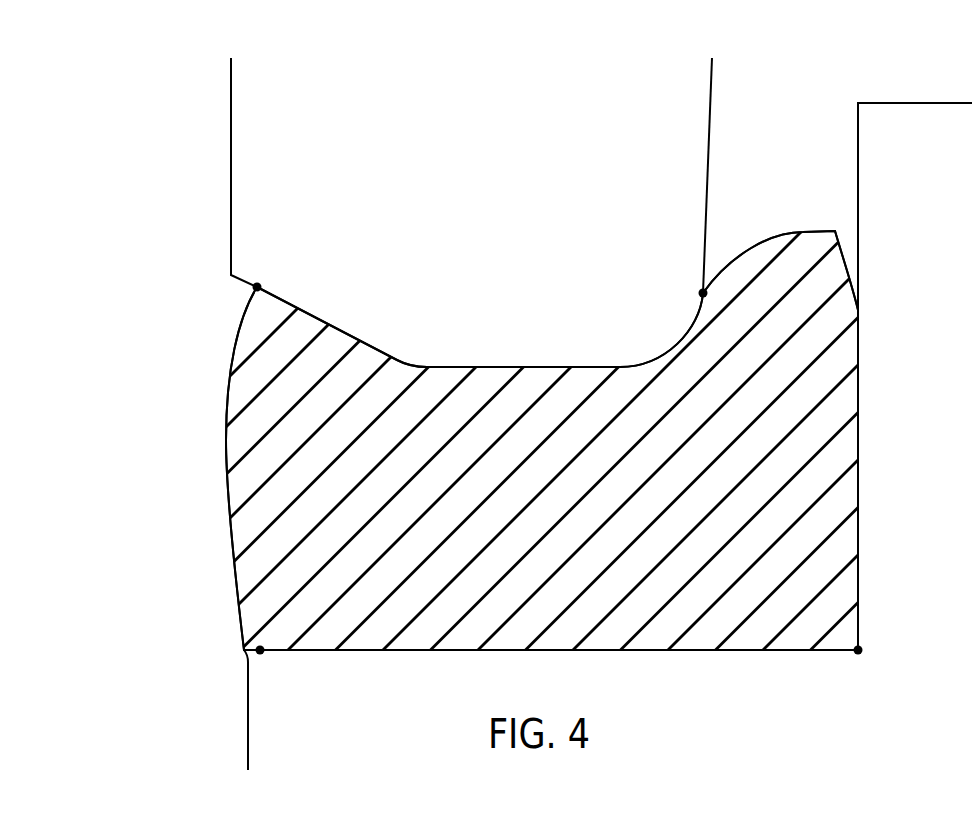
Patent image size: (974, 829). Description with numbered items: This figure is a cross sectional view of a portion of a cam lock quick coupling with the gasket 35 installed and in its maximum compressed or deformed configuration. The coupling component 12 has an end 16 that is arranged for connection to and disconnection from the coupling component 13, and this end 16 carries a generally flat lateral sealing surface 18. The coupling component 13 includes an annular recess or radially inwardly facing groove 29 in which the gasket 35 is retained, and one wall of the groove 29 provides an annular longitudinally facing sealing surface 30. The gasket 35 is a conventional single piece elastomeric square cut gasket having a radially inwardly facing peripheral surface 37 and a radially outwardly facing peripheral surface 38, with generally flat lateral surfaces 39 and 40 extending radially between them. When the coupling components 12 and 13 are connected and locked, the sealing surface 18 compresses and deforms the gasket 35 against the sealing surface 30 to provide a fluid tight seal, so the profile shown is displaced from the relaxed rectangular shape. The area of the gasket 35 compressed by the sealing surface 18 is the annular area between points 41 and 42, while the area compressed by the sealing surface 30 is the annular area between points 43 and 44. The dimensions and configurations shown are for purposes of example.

The coupling component 12 is at (395, 130).
The coupling component 13 is at (323, 747).
The end 16 is at (247, 153).
The lateral sealing surface 18 is at (549, 366).
The annular recess or radially inwardly facing groove 29 is at (840, 238).
The longitudinally facing sealing surface 30 is at (424, 648).
The gasket 35 is at (212, 371).
The radially inwardly facing peripheral surface 37 is at (228, 492).
The radially outwardly facing peripheral surface 38 is at (860, 480).
The lateral surface 39 is at (336, 326).
The lateral surface 40 is at (335, 651).
The point 41 is at (703, 293).
The point 42 is at (257, 287).
The point 43 is at (861, 654).
The point 44 is at (262, 653).